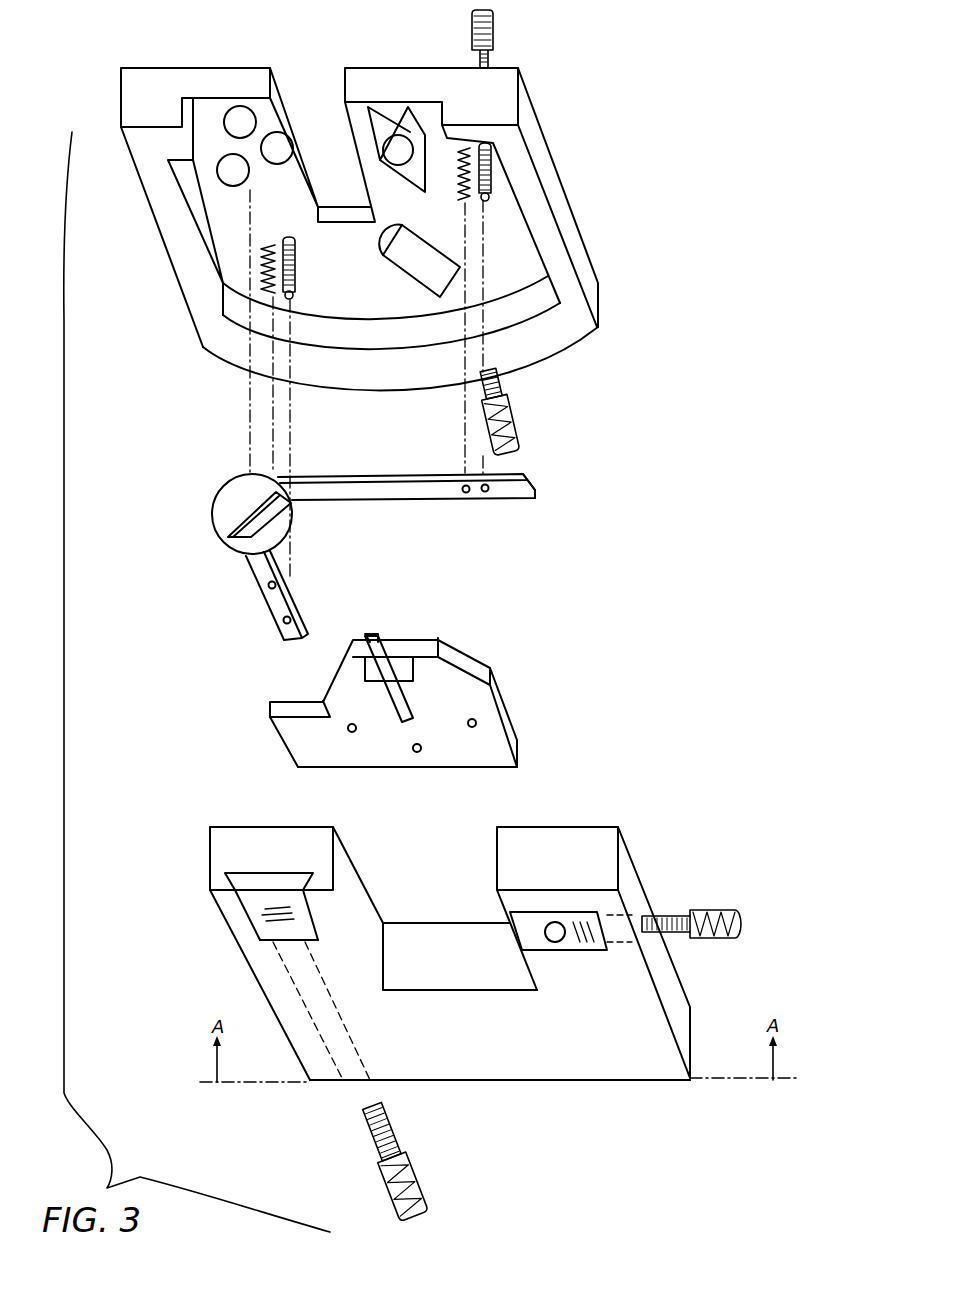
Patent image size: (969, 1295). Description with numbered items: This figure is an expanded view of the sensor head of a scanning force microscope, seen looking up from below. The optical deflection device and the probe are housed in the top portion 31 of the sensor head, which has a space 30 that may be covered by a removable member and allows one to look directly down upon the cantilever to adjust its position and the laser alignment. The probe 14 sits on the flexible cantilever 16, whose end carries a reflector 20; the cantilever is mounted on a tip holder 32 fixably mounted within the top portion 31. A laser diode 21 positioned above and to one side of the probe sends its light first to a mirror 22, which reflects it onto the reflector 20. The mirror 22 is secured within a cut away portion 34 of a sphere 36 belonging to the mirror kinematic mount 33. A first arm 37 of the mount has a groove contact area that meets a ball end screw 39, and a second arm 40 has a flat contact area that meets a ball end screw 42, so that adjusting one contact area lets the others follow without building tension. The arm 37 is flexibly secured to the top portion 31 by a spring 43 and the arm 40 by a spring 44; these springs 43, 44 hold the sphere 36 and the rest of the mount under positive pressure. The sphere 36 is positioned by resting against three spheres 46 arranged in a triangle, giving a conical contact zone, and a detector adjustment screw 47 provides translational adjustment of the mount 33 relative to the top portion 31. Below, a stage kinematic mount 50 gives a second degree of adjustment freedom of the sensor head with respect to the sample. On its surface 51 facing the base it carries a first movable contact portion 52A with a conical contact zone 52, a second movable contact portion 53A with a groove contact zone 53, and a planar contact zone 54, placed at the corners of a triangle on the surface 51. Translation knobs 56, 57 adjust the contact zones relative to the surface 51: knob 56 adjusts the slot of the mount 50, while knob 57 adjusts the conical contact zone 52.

The space 30 is at (316, 106).
The top portion 31 is at (616, 297).
The mirror 22 is at (398, 137).
The spheres 46 is at (222, 159).
The spring 44 is at (468, 165).
The ball end screw 42 is at (495, 190).
The laser diode 21 is at (447, 263).
The spring 43 is at (263, 272).
The ball end screw 39 is at (292, 297).
The detector adjustment screw 47 is at (515, 425).
The sphere 36 is at (215, 493).
The cut away portion 34 is at (292, 527).
The second arm 40 is at (400, 495).
The mirror kinematic mount 33 is at (544, 505).
The first arm 37 is at (275, 602).
The tip holder 32 is at (510, 713).
The probe 14 is at (373, 650).
The reflector 20 is at (372, 633).
The cantilever 16 is at (380, 655).
The stage kinematic mount 50 is at (203, 871).
The surface 51 is at (581, 1058).
The planar contact zone 54 is at (458, 1058).
The groove contact zone 53 is at (270, 913).
The second movable contact portion 53A is at (263, 923).
The conical contact zone 52 is at (555, 920).
The first movable contact portion 52A is at (593, 927).
The translation knob 57 is at (717, 938).
The translation knob 56 is at (372, 1150).